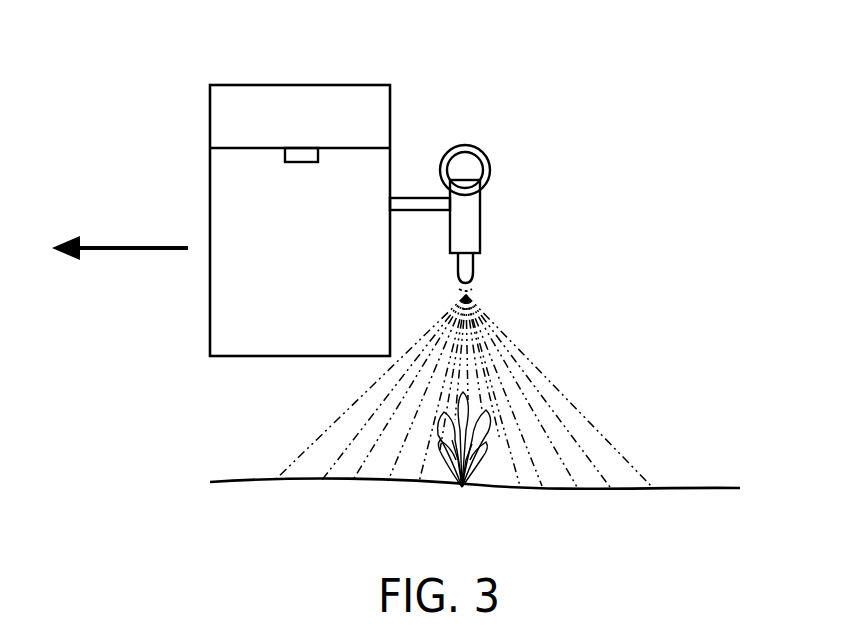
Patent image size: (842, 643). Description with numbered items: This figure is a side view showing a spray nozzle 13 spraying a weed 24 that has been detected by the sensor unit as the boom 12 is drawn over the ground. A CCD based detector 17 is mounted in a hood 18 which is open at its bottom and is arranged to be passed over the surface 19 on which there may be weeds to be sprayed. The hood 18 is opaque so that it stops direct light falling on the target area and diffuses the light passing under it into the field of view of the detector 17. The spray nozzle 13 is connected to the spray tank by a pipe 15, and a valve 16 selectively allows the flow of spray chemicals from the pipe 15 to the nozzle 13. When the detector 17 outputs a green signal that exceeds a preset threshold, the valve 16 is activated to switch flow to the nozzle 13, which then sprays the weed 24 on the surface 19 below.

The boom 12 is at (480, 162).
The spray nozzle 13 is at (477, 272).
The pipe 15 is at (489, 160).
The valve 16 is at (483, 222).
The detector 17 is at (302, 157).
The hood 18 is at (322, 271).
The surface 19 is at (655, 520).
The weed 24 is at (495, 452).